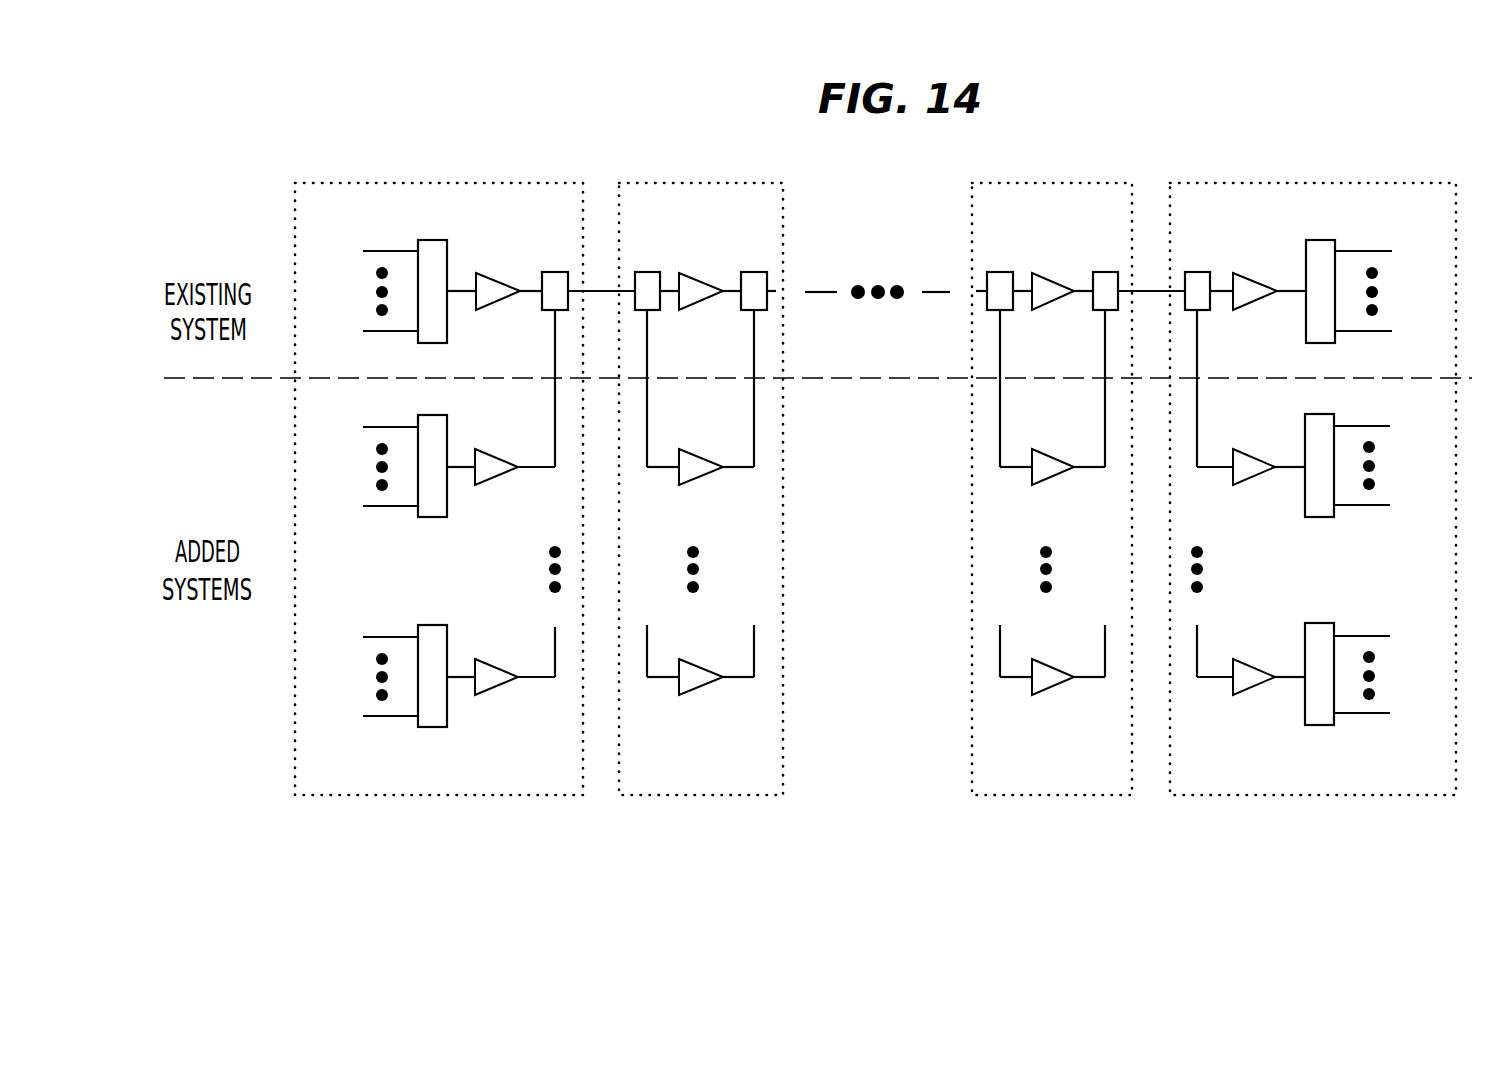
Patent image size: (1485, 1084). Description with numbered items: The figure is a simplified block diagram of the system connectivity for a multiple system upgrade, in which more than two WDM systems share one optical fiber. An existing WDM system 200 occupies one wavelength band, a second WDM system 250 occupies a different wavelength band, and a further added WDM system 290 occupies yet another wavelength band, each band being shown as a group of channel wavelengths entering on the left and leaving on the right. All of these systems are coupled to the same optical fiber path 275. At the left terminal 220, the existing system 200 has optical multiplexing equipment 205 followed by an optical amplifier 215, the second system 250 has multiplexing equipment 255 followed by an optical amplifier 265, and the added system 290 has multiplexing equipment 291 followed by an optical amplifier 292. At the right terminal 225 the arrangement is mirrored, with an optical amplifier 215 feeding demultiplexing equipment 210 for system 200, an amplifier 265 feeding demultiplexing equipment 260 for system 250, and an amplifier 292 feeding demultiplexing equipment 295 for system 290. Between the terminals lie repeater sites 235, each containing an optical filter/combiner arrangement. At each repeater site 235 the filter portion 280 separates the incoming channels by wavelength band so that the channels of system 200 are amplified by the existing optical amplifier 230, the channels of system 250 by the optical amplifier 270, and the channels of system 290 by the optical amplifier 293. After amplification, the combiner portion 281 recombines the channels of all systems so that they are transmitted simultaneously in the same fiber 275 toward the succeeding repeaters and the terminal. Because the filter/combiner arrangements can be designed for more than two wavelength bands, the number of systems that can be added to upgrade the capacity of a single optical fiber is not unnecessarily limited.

The existing WDM system 200 is at (226, 245).
The second WDM system 250 is at (226, 480).
The WDM system 290 is at (226, 690).
The terminal 220 is at (423, 184).
The repeater site 235 is at (705, 184).
The terminal 225 is at (1283, 184).
The optical multiplexing/demultiplexing equipment 205 is at (440, 240).
The optical multiplexing/demultiplexing equipment 210 is at (1320, 240).
The optical amplifier 215 is at (500, 305).
The optical amplifier 230 is at (700, 305).
The filter portion 280 is at (647, 272).
The combiner portion 281 is at (555, 272).
The optical fiber path 275 is at (822, 292).
The optical multiplexing/demultiplexing equipment 255 is at (433, 517).
The optical multiplexing/demultiplexing equipment 260 is at (1320, 517).
The optical amplifier 265 is at (500, 480).
The optical amplifier 270 is at (703, 480).
The optical multiplexing/demultiplexing equipment 291 is at (433, 727).
The optical amplifier 292 is at (500, 690).
The optical amplifier 293 is at (703, 690).
The optical multiplexing/demultiplexing equipment 295 is at (1320, 725).